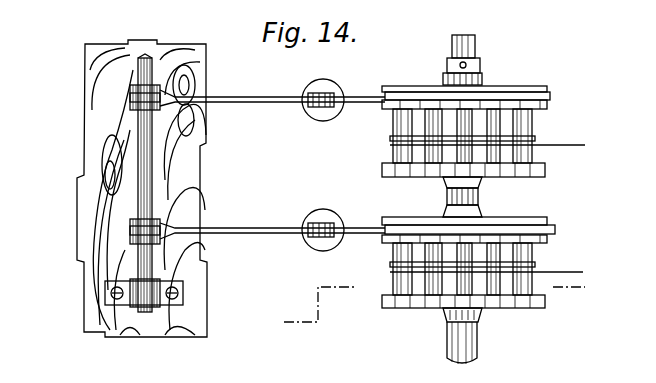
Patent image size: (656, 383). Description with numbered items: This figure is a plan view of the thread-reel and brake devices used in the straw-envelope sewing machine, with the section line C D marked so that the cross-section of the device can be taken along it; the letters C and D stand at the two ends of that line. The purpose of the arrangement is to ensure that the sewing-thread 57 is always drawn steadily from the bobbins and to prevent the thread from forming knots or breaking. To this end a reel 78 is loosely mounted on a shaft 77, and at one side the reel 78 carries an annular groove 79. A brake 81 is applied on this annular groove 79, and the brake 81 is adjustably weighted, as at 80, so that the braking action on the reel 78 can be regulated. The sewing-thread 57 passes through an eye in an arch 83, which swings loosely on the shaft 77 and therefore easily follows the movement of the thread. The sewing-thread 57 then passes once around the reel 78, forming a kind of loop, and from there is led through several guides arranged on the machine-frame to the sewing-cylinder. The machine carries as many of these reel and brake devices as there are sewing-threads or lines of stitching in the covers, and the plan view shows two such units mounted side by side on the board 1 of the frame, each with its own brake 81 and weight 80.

The wooden board 1 is at (84, 141).
The section line C D C is at (100, 318).
The brake 81 is at (258, 97).
The adjustable weight 80 is at (332, 112).
The annular groove 79 is at (422, 86).
The reel 78 is at (548, 172).
The sewing-thread 57 is at (560, 145).
The arch 83 is at (481, 79).
The shaft 77 is at (475, 345).
The section line C D is at (445, 300).